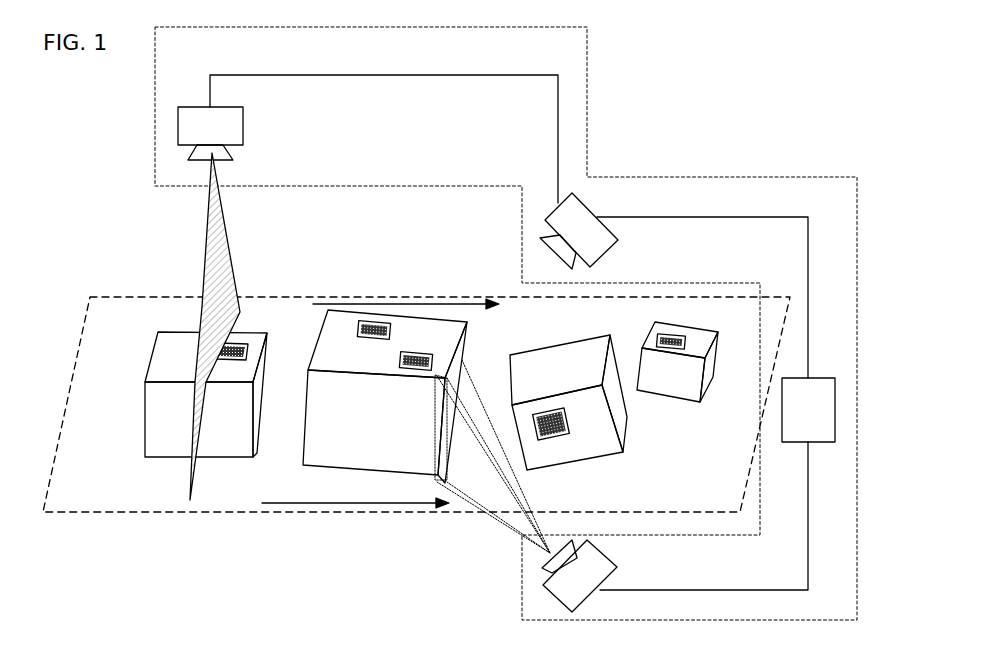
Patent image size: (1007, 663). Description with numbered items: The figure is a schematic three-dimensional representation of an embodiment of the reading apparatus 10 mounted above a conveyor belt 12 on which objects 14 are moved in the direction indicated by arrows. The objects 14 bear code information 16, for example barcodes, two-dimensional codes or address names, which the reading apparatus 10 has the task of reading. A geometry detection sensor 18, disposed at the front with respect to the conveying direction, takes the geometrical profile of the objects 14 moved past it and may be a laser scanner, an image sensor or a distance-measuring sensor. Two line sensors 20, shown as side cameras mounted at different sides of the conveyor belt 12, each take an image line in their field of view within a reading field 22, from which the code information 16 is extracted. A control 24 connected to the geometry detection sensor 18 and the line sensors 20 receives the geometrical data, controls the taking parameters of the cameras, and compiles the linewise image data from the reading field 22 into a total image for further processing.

The reading apparatus 10 is at (506, 323).
The conveyor belt 12 is at (416, 432).
The objects 14 is at (177, 408).
The code information 16 is at (272, 310).
The geometry detection sensor 18 is at (328, 287).
The line sensors 20 is at (641, 372).
The reading field 22 is at (426, 431).
The control 24 is at (816, 367).